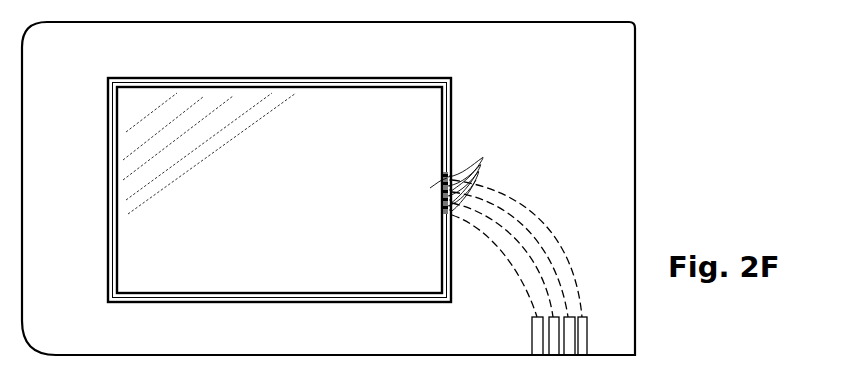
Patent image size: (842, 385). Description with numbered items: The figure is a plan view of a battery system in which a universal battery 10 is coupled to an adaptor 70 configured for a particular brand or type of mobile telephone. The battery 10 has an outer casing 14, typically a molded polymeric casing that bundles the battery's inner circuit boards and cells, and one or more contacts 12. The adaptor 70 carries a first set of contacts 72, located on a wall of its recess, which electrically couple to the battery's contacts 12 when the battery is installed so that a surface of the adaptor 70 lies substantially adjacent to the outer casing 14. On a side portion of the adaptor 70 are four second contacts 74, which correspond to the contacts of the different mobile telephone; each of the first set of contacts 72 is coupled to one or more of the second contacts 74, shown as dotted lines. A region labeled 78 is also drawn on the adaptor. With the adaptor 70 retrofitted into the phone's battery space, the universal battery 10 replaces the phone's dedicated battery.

The universal battery 10 is at (167, 308).
The contacts 12 is at (443, 180).
The outer casing 14 is at (281, 209).
The adaptor 70 is at (646, 157).
The first set of contacts 72 is at (458, 176).
The second contacts 74 is at (534, 352).
The back surface 78 is at (554, 60).